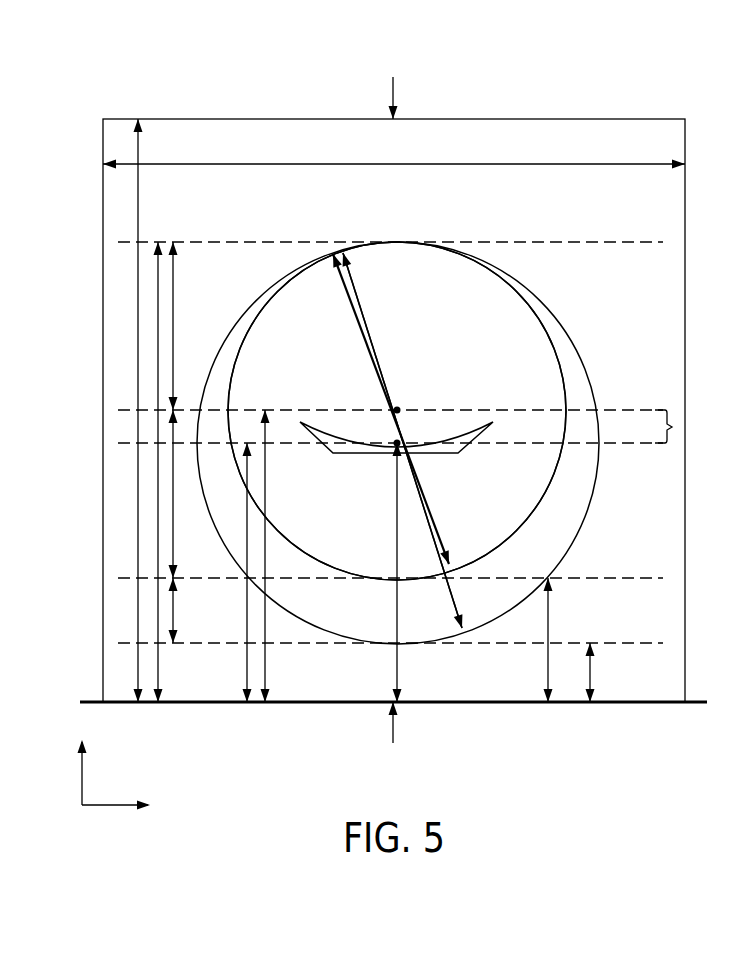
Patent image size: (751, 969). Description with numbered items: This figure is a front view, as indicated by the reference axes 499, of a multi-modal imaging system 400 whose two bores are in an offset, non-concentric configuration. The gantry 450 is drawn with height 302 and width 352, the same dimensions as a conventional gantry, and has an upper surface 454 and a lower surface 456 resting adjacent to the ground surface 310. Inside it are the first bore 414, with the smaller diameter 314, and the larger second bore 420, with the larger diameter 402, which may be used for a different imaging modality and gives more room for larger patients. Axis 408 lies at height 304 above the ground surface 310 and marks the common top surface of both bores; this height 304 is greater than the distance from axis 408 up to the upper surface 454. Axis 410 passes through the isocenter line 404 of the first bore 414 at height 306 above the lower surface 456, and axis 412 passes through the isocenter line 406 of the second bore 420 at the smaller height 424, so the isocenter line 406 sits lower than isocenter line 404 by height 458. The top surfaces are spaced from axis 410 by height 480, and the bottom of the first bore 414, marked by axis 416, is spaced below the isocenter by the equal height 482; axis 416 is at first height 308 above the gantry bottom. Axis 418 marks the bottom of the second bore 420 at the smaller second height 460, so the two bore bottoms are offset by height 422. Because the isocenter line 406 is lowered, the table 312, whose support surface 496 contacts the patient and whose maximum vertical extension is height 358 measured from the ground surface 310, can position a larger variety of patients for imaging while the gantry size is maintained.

The height 302 is at (139, 220).
The height 304 is at (158, 653).
The height 306 is at (265, 653).
The first height 308 is at (550, 618).
The ground surface 310 is at (93, 700).
The table 312 is at (330, 455).
The diameter 314 is at (370, 337).
The width 352 is at (235, 164).
The height 358 is at (397, 686).
The multi-modal imaging system 400 is at (540, 89).
The diameter 402 is at (350, 300).
The isocenter line 404 is at (422, 410).
The isocenter line 406 is at (382, 428).
The axis 408 is at (560, 242).
The axis 410 is at (607, 410).
The axis 412 is at (607, 443).
The first bore 414 is at (558, 466).
The axis 416 is at (607, 578).
The axis 418 is at (615, 643).
The second bore 420 is at (461, 634).
The height 422 is at (174, 611).
The height 424 is at (247, 510).
The gantry 450 is at (433, 119).
The upper surface 454 is at (393, 86).
The lower surface 456 is at (393, 736).
The height 458 is at (672, 427).
The second height 460 is at (592, 668).
The height 480 is at (176, 290).
The height 482 is at (175, 502).
The support surface 496 is at (397, 542).
The reference axes 499 is at (131, 749).